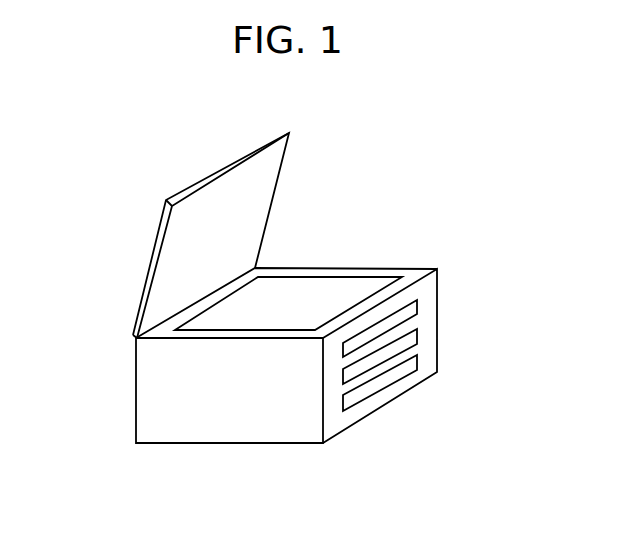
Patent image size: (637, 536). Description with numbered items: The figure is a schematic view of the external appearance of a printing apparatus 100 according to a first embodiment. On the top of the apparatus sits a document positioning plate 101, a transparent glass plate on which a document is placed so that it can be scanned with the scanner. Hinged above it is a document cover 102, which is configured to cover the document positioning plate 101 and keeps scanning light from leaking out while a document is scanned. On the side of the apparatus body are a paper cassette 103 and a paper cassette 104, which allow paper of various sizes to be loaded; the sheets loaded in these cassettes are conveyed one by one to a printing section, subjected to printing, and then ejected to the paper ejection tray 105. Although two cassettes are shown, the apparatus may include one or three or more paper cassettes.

The printing apparatus 100 is at (178, 425).
The document positioning plate 101 is at (318, 290).
The document cover 102 is at (148, 267).
The paper cassette 103 is at (417, 333).
The paper cassette 104 is at (409, 374).
The paper ejection tray 105 is at (417, 302).